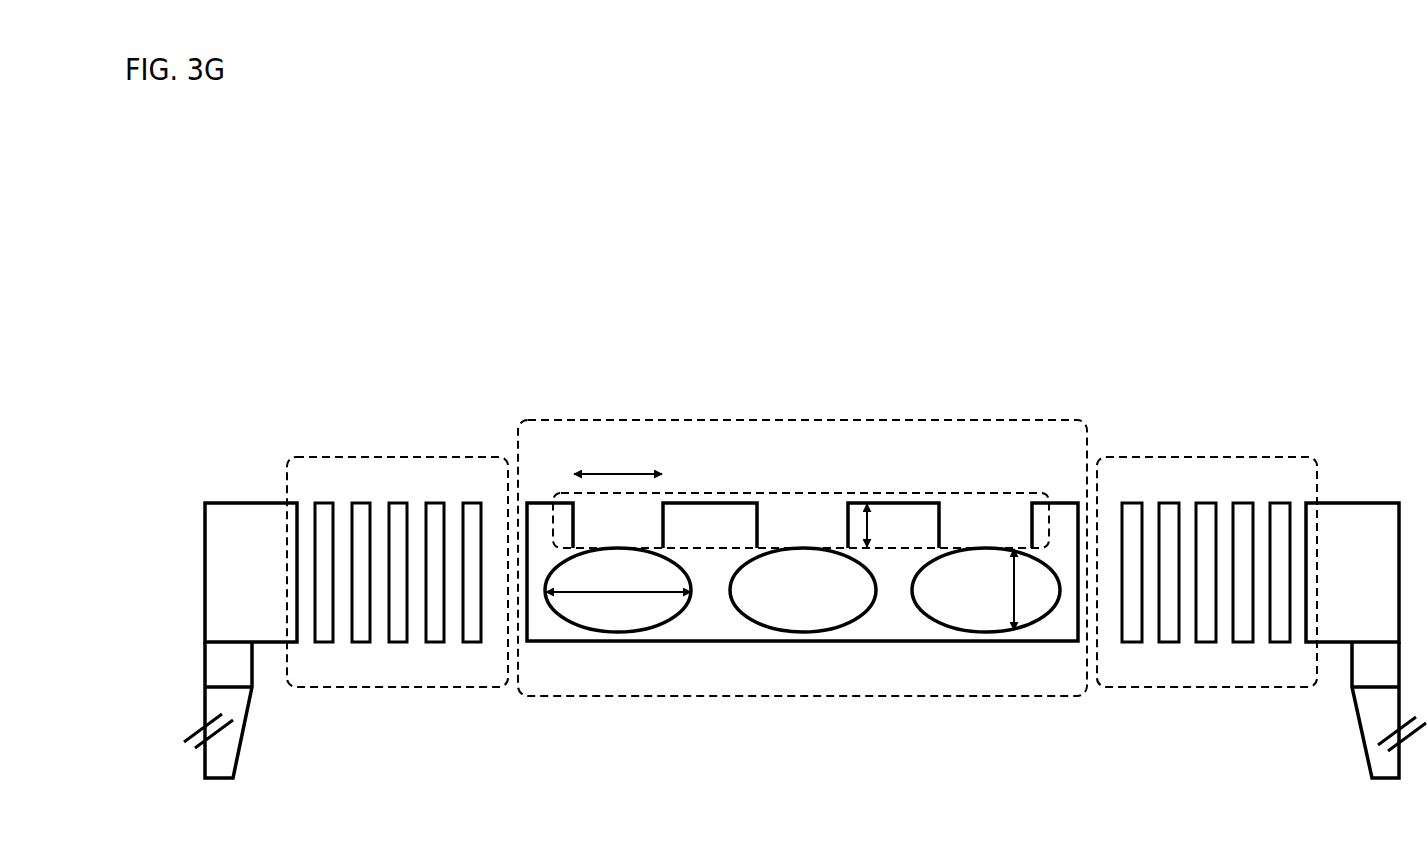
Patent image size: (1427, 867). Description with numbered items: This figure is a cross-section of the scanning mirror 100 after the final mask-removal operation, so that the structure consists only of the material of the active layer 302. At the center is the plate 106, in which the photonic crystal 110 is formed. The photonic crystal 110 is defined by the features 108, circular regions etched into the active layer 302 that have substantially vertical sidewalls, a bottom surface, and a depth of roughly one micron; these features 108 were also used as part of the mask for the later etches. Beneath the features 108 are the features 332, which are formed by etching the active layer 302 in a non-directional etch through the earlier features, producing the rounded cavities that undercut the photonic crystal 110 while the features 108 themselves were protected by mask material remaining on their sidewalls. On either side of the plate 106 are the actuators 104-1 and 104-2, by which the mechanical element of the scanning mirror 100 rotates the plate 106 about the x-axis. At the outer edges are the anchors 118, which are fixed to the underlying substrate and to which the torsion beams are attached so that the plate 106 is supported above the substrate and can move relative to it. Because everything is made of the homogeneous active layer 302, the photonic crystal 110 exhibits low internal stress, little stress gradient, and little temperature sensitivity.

The scanning mirror 100 is at (244, 279).
The anchors 118 is at (240, 503).
The active layer 302 is at (258, 614).
The first actuator 104-1 is at (421, 601).
The second actuator 104-2 is at (1182, 601).
The plate 106 is at (802, 558).
The features 108 is at (618, 532).
The photonic crystal 110 is at (802, 492).
The features 332 is at (798, 603).